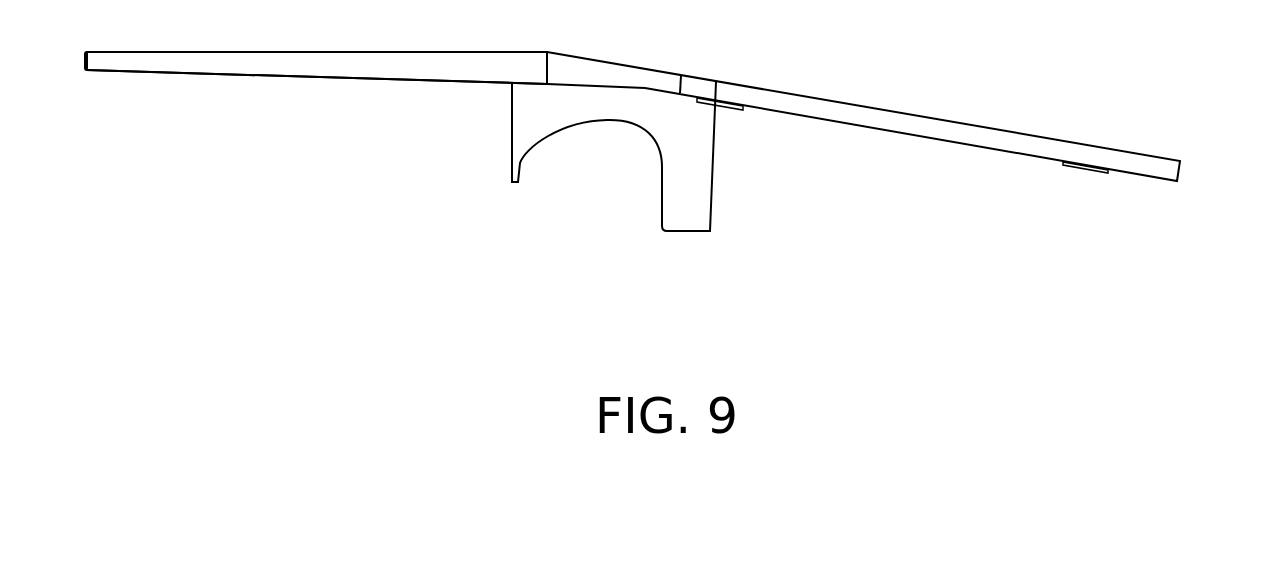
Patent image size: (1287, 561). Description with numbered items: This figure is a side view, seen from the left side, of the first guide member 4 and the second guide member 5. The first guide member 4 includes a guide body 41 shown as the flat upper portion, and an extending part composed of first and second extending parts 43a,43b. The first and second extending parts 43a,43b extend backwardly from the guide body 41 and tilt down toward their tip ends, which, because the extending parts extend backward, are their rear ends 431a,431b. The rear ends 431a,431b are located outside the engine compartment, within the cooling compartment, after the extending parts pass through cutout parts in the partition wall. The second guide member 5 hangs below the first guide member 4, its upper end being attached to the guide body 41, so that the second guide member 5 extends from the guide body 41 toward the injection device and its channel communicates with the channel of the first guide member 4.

The first guide member 4 is at (670, 163).
The guide body 41 is at (363, 81).
The second guide member 5 is at (503, 148).
The first and second extending parts 43a,43b is at (901, 163).
The rear ends of the extending parts 431a,431b is at (1150, 178).